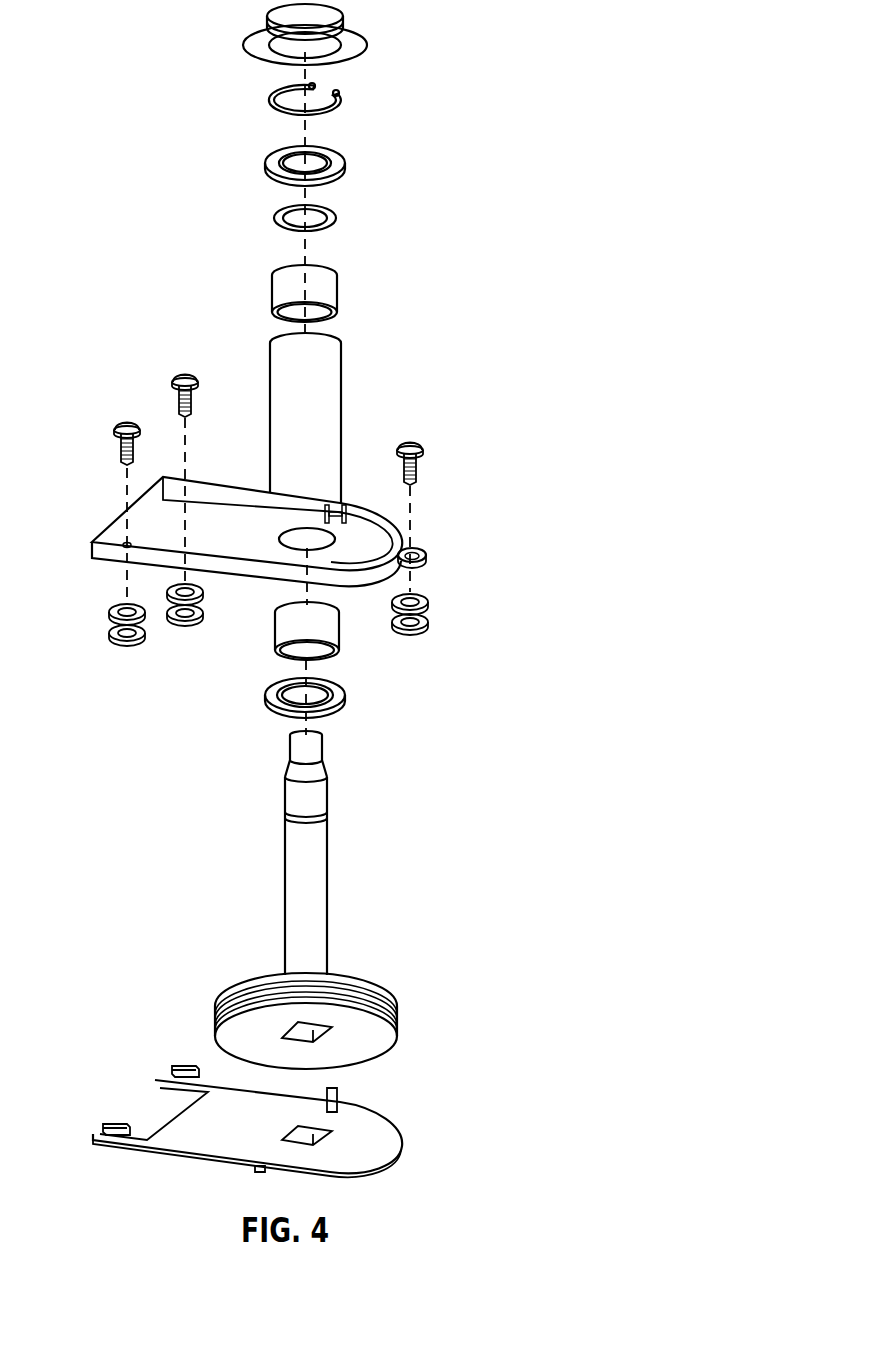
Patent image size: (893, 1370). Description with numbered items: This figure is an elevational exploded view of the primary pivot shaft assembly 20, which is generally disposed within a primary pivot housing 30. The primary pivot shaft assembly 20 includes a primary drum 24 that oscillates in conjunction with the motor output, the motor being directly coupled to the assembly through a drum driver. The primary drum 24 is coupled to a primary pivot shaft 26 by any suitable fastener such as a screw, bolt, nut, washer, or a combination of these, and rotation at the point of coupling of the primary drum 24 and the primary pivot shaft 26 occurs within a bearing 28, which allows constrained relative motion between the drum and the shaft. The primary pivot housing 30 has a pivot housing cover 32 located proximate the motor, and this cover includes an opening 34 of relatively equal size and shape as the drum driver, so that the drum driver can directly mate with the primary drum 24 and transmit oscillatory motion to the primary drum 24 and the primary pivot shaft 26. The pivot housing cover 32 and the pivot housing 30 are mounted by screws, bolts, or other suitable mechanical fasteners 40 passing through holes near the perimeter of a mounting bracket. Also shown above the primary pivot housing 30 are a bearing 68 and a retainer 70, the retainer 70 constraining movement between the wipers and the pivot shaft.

The primary pivot shaft assembly 20 is at (437, 18).
The primary drum 24 is at (224, 998).
The primary pivot shaft 26 is at (297, 863).
The bearing 28 is at (287, 623).
The primary pivot housing 30 is at (330, 421).
The pivot housing cover 32 is at (378, 1140).
The opening 34 is at (302, 1138).
The mechanical fasteners 40 is at (126, 426).
The bearing 68 is at (330, 287).
The retainer 70 is at (375, 13).